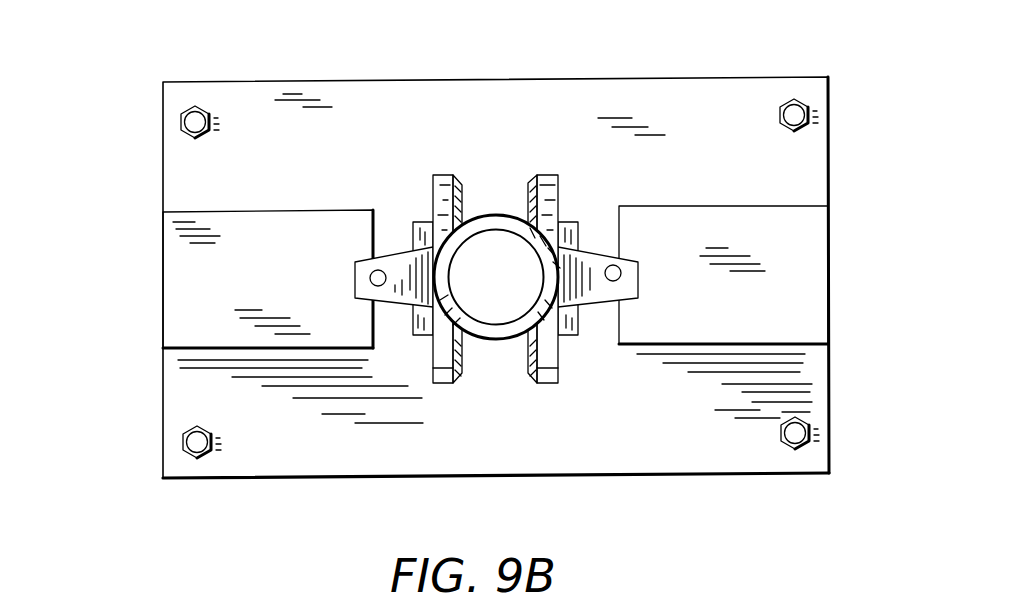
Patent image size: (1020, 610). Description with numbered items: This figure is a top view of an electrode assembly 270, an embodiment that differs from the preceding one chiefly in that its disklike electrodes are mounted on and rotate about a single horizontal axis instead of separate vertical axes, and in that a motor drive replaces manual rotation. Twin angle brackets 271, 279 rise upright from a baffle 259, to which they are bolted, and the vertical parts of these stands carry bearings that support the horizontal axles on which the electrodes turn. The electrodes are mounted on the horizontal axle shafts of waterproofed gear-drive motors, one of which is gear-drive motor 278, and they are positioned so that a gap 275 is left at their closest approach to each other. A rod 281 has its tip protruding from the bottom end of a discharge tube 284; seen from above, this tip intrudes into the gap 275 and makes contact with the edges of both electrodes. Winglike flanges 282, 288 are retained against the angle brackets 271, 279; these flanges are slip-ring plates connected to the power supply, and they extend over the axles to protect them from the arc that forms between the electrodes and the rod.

The baffle 259 is at (685, 455).
The electrode assembly 270 is at (128, 228).
The angle bracket 271 is at (420, 232).
The gap 275 is at (507, 183).
The gear-drive motor 278 is at (213, 342).
The angle bracket 279 is at (573, 222).
The rod 281 is at (497, 320).
The winglike flange 282 is at (403, 293).
The discharge tube 284 is at (485, 273).
The winglike flange 288 is at (590, 277).